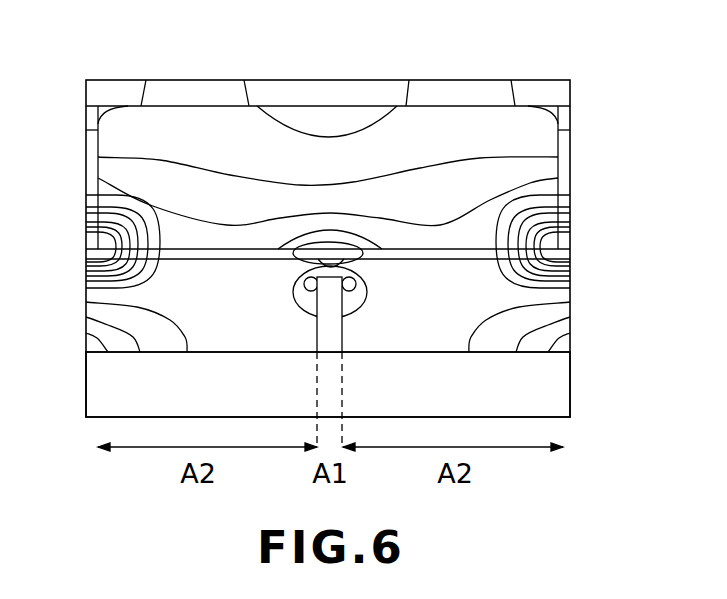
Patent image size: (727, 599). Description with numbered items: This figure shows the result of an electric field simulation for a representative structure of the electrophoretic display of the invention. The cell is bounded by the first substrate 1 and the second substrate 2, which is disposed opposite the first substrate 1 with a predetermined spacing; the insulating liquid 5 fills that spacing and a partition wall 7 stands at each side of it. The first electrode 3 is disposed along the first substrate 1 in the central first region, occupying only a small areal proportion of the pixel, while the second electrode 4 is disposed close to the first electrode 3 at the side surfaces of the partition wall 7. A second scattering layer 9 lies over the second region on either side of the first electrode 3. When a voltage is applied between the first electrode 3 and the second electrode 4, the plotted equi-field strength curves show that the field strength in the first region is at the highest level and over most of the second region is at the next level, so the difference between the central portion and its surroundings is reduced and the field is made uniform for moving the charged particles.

The first substrate 1 is at (557, 390).
The second substrate 2 is at (185, 86).
The first electrode 3 is at (323, 332).
The second electrode 4 is at (90, 242).
The insulating liquid 5 is at (437, 125).
The partition wall 7 is at (90, 132).
The second scattering layer 9 is at (427, 343).